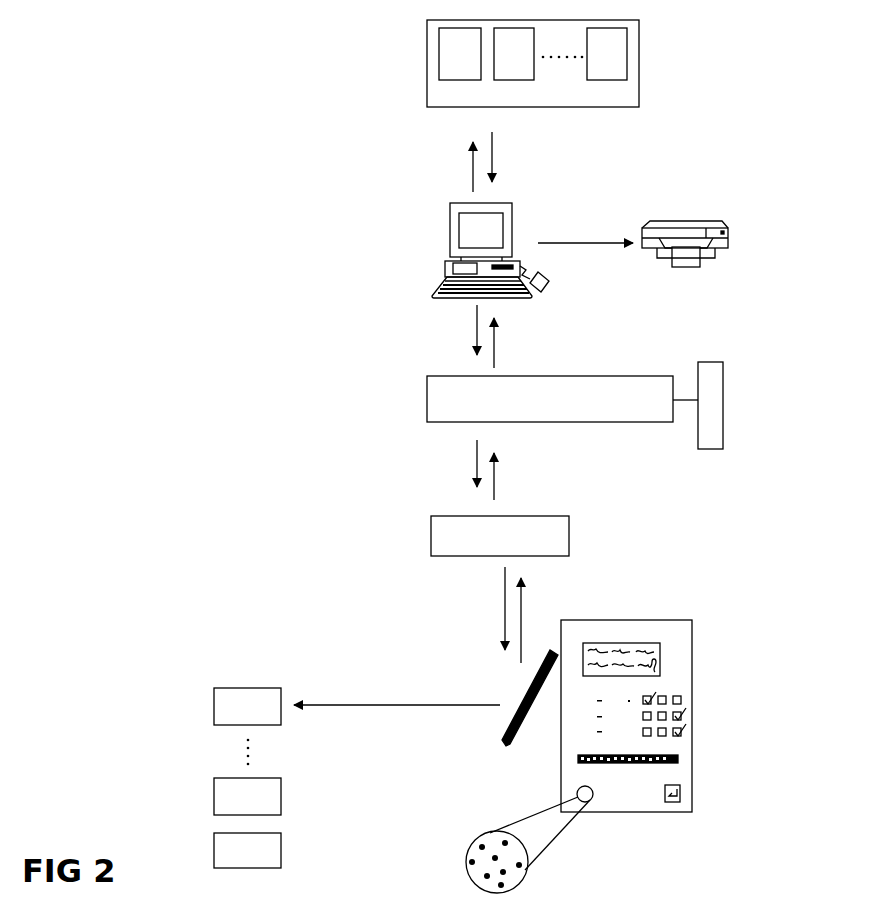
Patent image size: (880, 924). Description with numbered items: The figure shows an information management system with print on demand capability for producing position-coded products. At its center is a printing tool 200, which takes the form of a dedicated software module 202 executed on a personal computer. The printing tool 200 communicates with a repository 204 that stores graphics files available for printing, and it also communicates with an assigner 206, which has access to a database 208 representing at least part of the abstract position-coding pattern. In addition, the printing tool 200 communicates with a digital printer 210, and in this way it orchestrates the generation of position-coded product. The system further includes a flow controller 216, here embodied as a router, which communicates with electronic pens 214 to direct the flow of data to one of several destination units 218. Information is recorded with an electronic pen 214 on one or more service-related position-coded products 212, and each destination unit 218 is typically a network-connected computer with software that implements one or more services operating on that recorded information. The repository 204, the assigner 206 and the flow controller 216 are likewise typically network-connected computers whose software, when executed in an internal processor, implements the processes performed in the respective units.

The printing tool 200 is at (436, 230).
The dedicated software module 202 is at (454, 269).
The repository 204 is at (639, 75).
The assigner 206 is at (550, 366).
The database 208 is at (701, 375).
The digital printer 210 is at (689, 217).
The position-coded product 212 is at (605, 744).
The electronic pen 214 is at (495, 720).
The flow controller 216 is at (569, 533).
The destination unit 218 is at (281, 727).